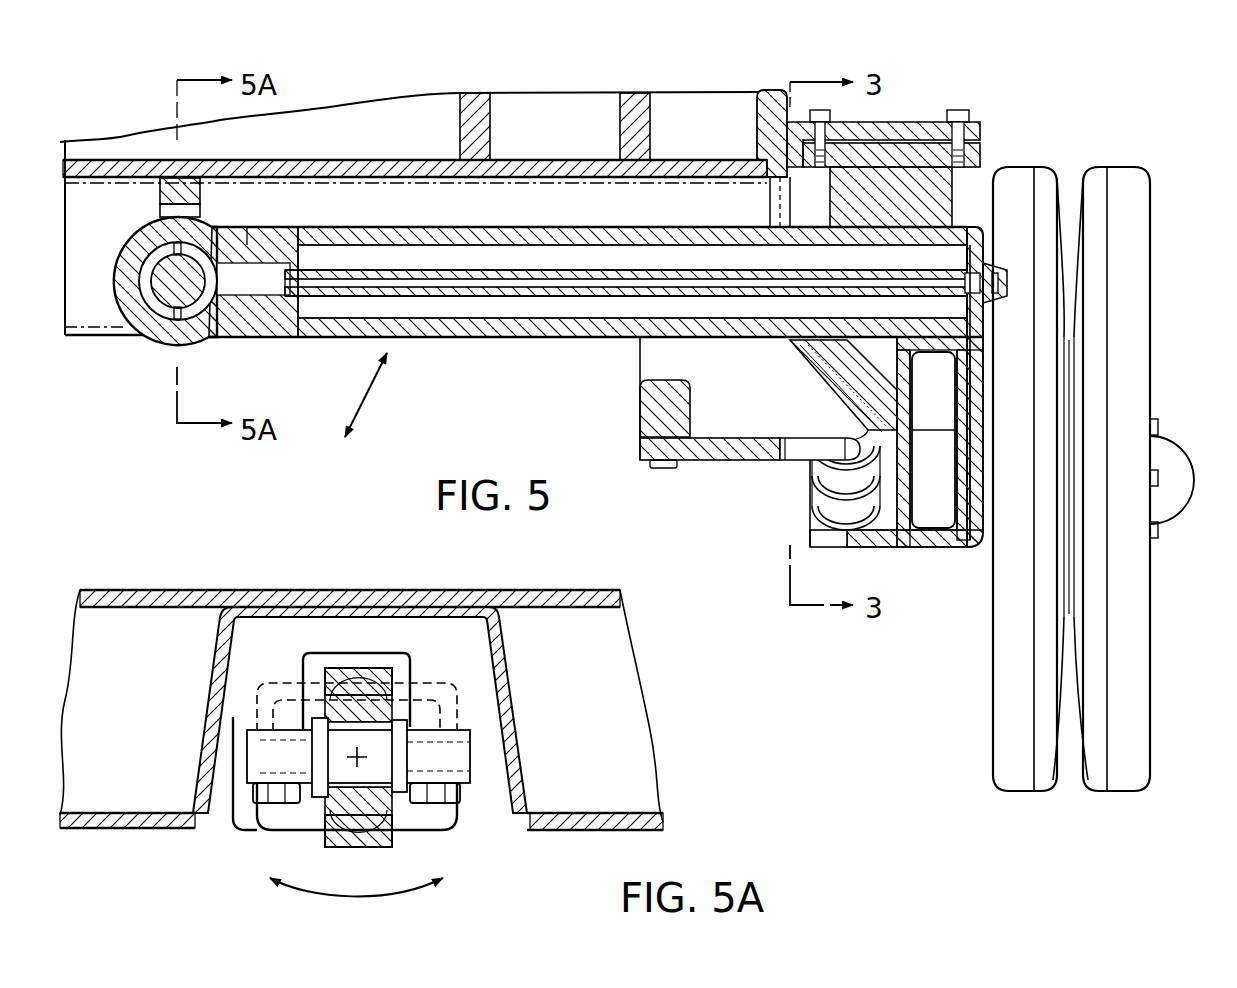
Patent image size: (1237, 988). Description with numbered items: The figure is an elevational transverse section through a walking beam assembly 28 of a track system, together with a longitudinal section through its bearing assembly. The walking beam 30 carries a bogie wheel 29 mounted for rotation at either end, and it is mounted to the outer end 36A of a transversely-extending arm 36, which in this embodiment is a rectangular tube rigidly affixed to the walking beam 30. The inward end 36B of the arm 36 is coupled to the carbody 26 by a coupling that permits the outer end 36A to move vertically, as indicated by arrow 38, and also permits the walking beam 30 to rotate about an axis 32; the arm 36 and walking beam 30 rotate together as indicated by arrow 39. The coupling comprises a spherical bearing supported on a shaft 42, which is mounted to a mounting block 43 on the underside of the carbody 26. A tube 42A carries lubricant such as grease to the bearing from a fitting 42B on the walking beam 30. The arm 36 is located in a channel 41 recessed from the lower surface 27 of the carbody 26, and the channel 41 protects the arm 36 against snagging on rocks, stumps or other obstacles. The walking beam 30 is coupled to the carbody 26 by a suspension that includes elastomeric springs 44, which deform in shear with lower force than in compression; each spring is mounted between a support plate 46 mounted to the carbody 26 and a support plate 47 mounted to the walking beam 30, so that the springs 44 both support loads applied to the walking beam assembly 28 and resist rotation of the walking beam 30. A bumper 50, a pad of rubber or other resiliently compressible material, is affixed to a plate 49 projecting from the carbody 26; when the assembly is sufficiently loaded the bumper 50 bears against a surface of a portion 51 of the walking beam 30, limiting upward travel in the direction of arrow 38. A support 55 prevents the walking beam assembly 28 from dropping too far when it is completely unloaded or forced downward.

In FIG. 5, the carbody 26 is at (137, 130).
In FIG. 5A, the carbody 26 is at (130, 587).
In FIG. 5, the lower surface 27 is at (108, 340).
In FIG. 5A, the lower surface 27 is at (133, 828).
In FIG. 5, the walking beam assembly 28 is at (1100, 135).
In FIG. 5, the bogie wheel 29 is at (1127, 373).
In FIG. 5, the walking beam 30 is at (938, 548).
In FIG. 5A, the axis 32 is at (360, 753).
In FIG. 5, the arm 36 is at (530, 342).
In FIG. 5A, the arm 36 is at (277, 830).
In FIG. 5, the outer end 36A is at (790, 342).
In FIG. 5, the inward end 36B is at (307, 340).
In FIG. 5, the arrow 38 is at (373, 398).
In FIG. 5A, the arrow 39 is at (367, 900).
In FIG. 5, the channel 41 is at (377, 183).
In FIG. 5A, the channel 41 is at (337, 622).
In FIG. 5, the shaft 42 is at (190, 270).
In FIG. 5A, the shaft 42 is at (417, 760).
In FIG. 5, the tube 42A is at (513, 272).
In FIG. 5, the fitting 42B is at (1008, 280).
In FIG. 5, the mounting block 43 is at (157, 190).
In FIG. 5A, the mounting block 43 is at (252, 667).
In FIG. 5, the elastomeric springs 44 is at (808, 485).
In FIG. 5, the support plate 46 is at (819, 421).
In FIG. 5, the support plate 47 is at (808, 512).
In FIG. 5, the plate 49 is at (983, 132).
In FIG. 5, the bumper 50 is at (892, 172).
In FIG. 5, the portion 51 is at (810, 222).
In FIG. 5, the support 55 is at (640, 402).